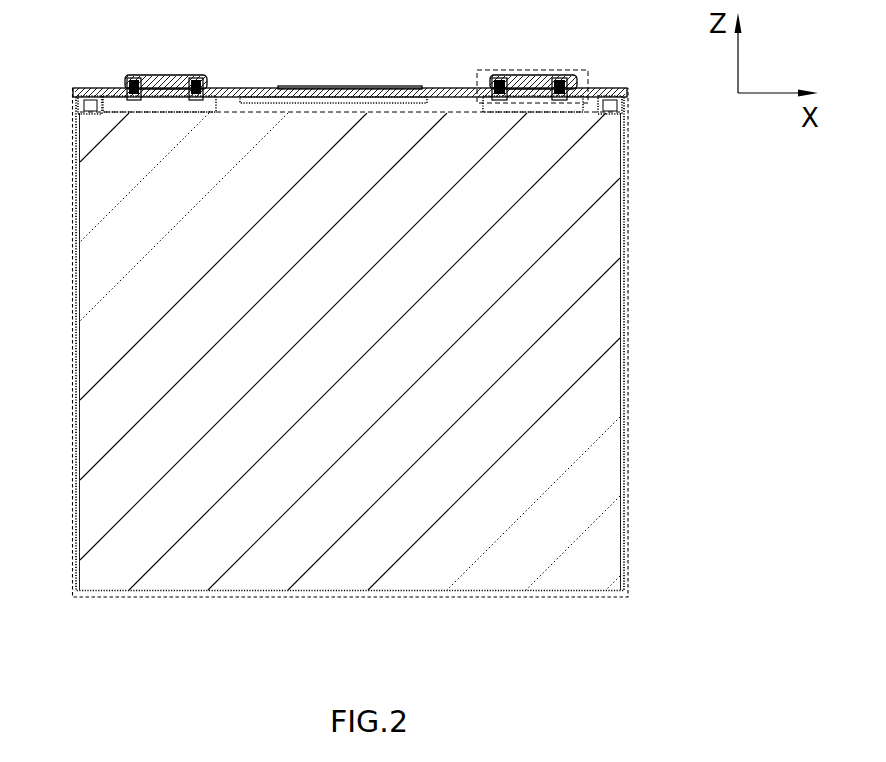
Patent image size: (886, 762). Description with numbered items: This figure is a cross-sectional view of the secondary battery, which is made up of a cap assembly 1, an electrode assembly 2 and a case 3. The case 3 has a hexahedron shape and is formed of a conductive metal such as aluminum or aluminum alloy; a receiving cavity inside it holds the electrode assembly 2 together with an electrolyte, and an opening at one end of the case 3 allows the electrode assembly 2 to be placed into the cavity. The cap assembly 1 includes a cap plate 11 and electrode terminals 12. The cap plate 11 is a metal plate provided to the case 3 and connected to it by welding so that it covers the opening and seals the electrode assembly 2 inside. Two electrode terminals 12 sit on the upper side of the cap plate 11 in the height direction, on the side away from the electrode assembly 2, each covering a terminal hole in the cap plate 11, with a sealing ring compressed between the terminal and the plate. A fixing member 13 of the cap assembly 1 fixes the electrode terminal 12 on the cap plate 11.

The cap assembly 1 is at (313, 46).
The electrode assembly 2 is at (104, 413).
The case 3 is at (73, 296).
The cap plate 11 is at (453, 88).
The electrode terminal 12 is at (151, 74).
The fixing member 13 is at (484, 74).